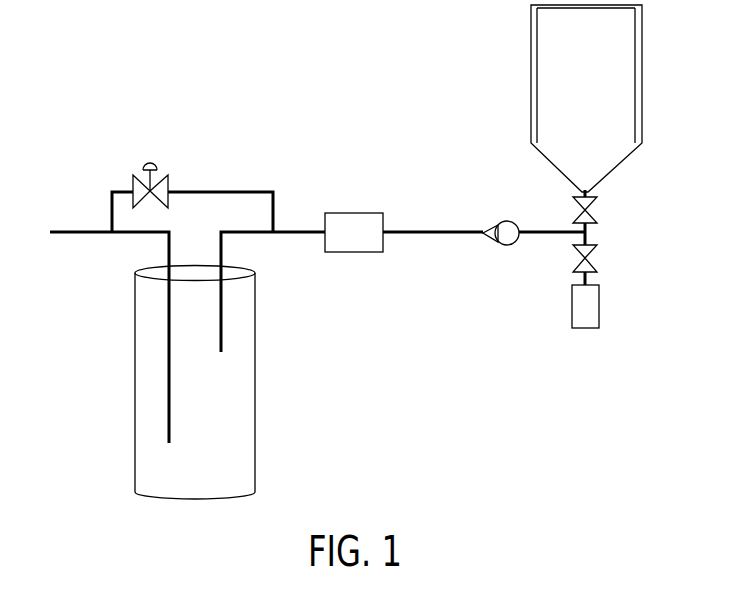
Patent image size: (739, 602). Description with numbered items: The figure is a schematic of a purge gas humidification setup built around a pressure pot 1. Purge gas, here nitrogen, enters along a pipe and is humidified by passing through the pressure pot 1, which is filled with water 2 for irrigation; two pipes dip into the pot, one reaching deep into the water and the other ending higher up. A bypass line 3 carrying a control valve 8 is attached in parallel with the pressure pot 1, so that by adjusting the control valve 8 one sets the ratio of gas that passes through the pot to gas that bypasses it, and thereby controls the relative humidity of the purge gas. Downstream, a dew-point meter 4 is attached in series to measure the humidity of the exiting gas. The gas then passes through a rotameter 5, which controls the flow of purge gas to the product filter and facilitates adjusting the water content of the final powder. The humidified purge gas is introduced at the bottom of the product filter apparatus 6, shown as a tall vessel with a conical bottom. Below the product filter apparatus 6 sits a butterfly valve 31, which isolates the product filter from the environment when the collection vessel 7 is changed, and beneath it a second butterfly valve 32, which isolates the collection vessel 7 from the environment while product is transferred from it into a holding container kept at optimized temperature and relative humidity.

The pressure pot 1 is at (257, 347).
The water 2 is at (215, 464).
The bypass line 3 is at (237, 192).
The dew-point meter 4 is at (360, 243).
The rotameter 5 is at (507, 222).
The product filter apparatus 6 is at (590, 118).
The collection vessel 7 is at (592, 315).
The control valve 8 is at (150, 162).
The butterfly valve 31 is at (598, 207).
The butterfly valve 32 is at (598, 255).